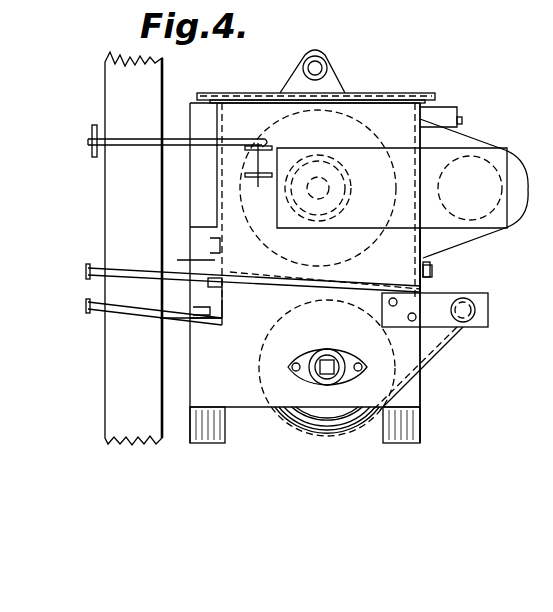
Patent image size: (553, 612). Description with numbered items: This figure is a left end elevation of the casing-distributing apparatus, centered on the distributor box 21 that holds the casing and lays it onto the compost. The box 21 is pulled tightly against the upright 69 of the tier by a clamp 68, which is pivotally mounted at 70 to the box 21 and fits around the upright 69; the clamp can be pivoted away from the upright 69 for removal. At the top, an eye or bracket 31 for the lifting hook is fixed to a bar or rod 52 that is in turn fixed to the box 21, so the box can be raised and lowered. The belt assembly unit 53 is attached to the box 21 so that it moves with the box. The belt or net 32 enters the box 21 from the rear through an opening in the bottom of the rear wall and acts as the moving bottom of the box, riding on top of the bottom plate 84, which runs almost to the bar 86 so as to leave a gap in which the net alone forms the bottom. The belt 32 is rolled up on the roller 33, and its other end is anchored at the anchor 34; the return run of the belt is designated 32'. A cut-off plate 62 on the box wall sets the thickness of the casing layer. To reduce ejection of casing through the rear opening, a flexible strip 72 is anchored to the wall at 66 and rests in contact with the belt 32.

The distributor box 21 is at (458, 114).
The eye or bracket 31 is at (322, 57).
The belt or net 32 is at (253, 256).
The belt cross-section 32' is at (154, 326).
The roller 33 is at (395, 428).
The anchor 34 is at (200, 318).
The bar or rod 52 is at (285, 93).
The belt assembly unit 53 is at (420, 386).
The cut-off plate 62 is at (208, 262).
The anchoring point of flexible strip 66 is at (432, 272).
The clamp 68 is at (144, 139).
The upright 69 is at (118, 62).
The pivot mounting 70 is at (247, 168).
The flexible strip 72 is at (457, 296).
The plate 84 is at (419, 270).
The bar 86 is at (212, 282).